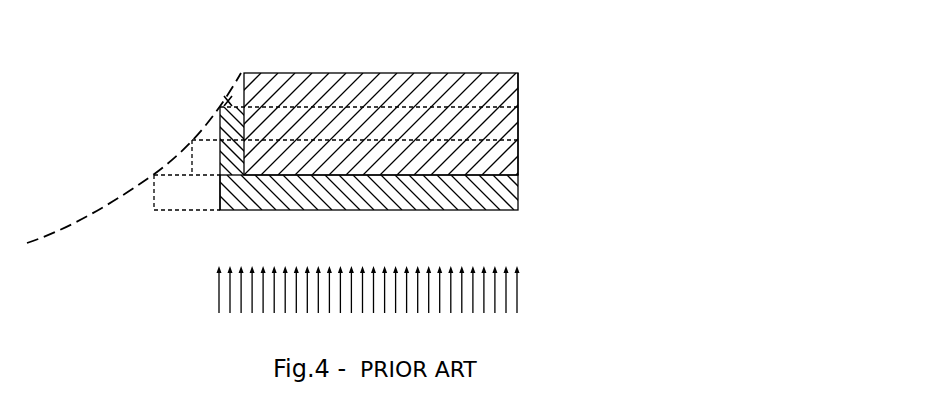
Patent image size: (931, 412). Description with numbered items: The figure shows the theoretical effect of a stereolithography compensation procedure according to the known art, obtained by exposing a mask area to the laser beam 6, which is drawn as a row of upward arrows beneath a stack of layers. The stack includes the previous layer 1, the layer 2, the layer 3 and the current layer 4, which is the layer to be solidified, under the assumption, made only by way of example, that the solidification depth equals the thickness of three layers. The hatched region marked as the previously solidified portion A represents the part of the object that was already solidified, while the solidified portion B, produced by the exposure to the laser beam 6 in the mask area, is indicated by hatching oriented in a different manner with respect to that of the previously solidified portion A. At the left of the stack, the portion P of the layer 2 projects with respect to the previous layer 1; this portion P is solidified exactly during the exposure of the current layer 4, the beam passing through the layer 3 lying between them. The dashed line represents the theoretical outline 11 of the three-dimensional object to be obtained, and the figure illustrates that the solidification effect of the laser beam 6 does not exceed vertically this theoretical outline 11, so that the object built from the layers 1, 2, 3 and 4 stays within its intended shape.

The previous layer 1 is at (536, 89).
The layer 2 is at (536, 123).
The third layer 3 is at (536, 157).
The current layer 4 is at (536, 192).
The laser beam 6 is at (517, 292).
The theoretical outline 11 is at (68, 227).
The previously solidified portion A is at (443, 88).
The solidified portion B is at (233, 208).
The portion P is at (228, 102).